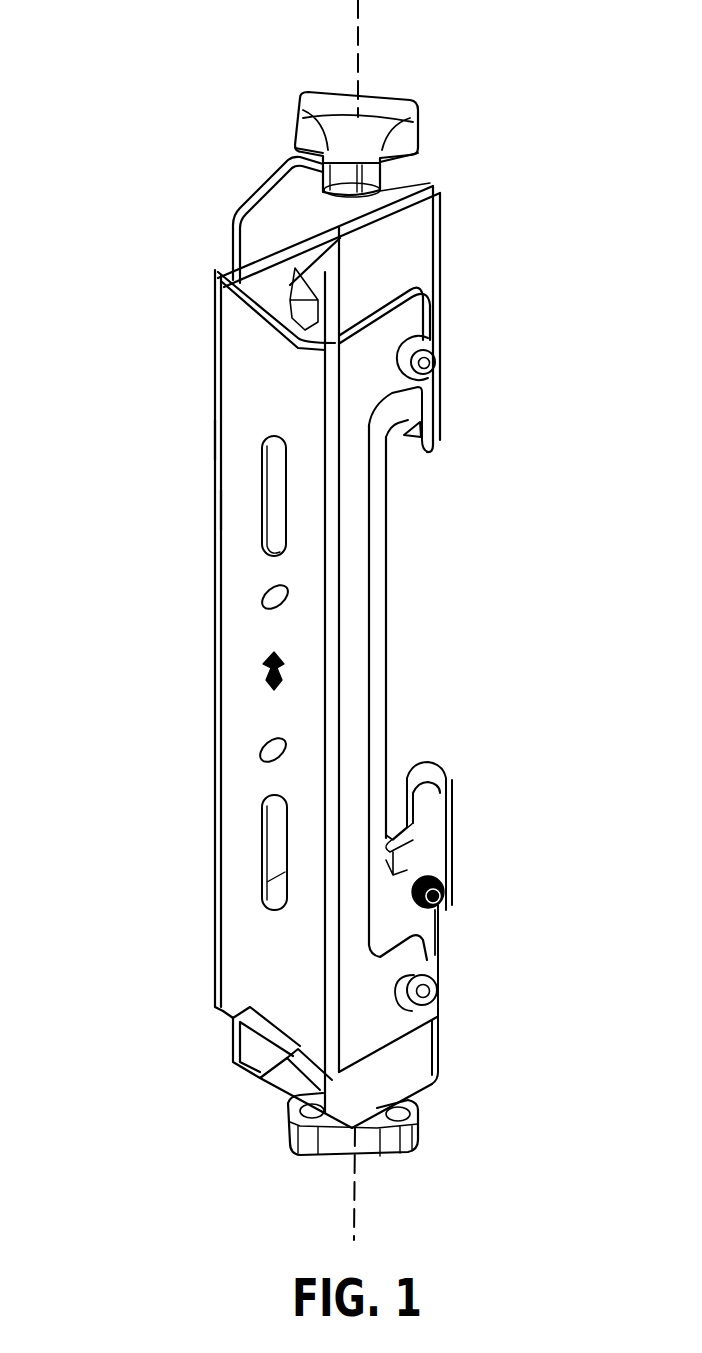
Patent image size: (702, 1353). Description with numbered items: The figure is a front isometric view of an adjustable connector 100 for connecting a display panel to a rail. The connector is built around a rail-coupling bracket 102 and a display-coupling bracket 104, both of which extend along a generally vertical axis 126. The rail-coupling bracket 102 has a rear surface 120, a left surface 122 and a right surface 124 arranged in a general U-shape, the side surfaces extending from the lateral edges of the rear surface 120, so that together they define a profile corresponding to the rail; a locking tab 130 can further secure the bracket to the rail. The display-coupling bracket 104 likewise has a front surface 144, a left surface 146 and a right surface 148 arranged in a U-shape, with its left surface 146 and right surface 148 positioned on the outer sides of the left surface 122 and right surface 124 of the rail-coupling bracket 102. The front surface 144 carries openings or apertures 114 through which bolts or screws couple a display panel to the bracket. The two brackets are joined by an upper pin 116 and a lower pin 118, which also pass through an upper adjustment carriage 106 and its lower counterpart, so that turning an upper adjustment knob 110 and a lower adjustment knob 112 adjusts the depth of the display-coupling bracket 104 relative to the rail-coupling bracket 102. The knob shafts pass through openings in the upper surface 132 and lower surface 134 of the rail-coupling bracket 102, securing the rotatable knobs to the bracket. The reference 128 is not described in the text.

The adjustable connector 100 is at (146, 92).
The rail-coupling bracket 102 is at (393, 258).
The display-coupling bracket 104 is at (217, 353).
The upper adjustment carriage 106 is at (287, 277).
The upper adjustment knob 110 is at (390, 100).
The lower adjustment knob 112 is at (300, 1147).
The openings or apertures 114 is at (260, 597).
The upper pin 116 is at (413, 347).
The lower pin 118 is at (425, 985).
The rear surface 120 is at (393, 193).
The left surface 122 is at (427, 277).
The right surface 124 is at (272, 170).
The axis 126 is at (359, 40).
The direction arrow 128 is at (442, 522).
The locking tab 130 is at (437, 805).
The upper surface 132 is at (423, 180).
The lower surface 134 is at (290, 1075).
The front surface 144 is at (237, 437).
The left surface 146 is at (358, 673).
The right surface 148 is at (218, 508).